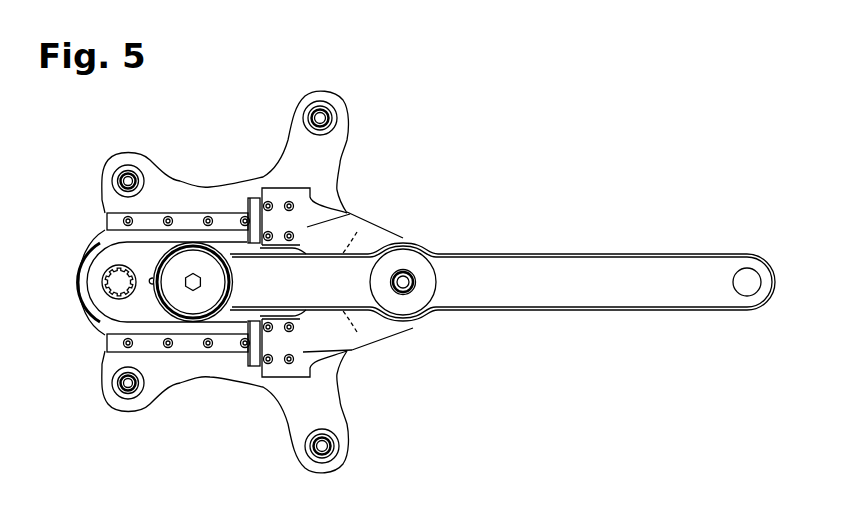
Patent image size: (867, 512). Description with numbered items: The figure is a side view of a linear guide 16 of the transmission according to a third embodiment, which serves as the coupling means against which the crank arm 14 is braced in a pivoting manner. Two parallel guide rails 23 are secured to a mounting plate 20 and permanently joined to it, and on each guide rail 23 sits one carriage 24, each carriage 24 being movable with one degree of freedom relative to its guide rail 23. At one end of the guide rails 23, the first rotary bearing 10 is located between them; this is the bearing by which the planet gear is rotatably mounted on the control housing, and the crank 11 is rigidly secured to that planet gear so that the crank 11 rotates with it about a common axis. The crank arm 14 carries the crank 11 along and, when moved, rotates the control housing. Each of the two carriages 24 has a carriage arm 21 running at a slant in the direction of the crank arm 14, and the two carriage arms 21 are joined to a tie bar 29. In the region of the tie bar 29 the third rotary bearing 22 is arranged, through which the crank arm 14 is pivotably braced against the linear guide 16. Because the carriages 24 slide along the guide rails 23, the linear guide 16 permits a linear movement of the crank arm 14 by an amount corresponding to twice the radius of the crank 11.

The first rotary bearing 10 is at (77, 278).
The crank 11 is at (140, 303).
The crank arm 14 is at (548, 285).
The linear guide 16 is at (58, 269).
The mounting plate 20 is at (320, 173).
The carriage arm 21 is at (307, 227).
The third rotary bearing 22 is at (402, 284).
The guide rail 23 is at (183, 227).
The carriage 24 is at (252, 217).
The tie bar 29 is at (393, 240).